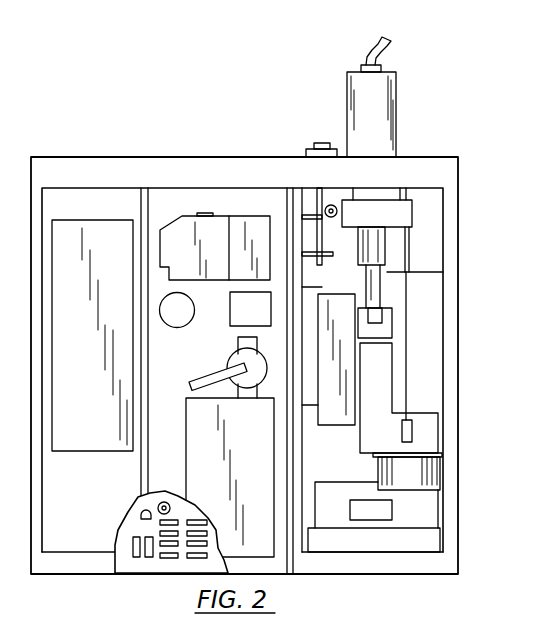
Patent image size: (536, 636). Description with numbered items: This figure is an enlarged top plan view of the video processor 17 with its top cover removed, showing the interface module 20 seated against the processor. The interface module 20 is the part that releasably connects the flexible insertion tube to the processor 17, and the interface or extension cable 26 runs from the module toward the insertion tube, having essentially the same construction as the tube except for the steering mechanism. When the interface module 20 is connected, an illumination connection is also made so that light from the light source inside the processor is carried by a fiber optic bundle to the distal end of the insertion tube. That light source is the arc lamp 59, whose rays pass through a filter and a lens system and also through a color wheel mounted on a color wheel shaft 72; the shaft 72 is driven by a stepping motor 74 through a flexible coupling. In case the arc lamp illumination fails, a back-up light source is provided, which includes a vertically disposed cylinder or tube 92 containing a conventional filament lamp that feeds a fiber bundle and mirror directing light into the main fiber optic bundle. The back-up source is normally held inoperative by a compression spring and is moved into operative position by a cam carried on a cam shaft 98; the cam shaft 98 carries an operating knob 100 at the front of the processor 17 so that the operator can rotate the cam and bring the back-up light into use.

The video processor 17 is at (198, 157).
The interface module 20 is at (375, 110).
The interface or extension cable 26 is at (372, 44).
The arc lamp 59 is at (372, 250).
The color wheel shaft 72 is at (405, 313).
The stepping motor 74 is at (418, 477).
The vertically disposed cylinder or tube 92 is at (334, 218).
The cam shaft 98 is at (313, 200).
The operating knob 100 is at (308, 148).